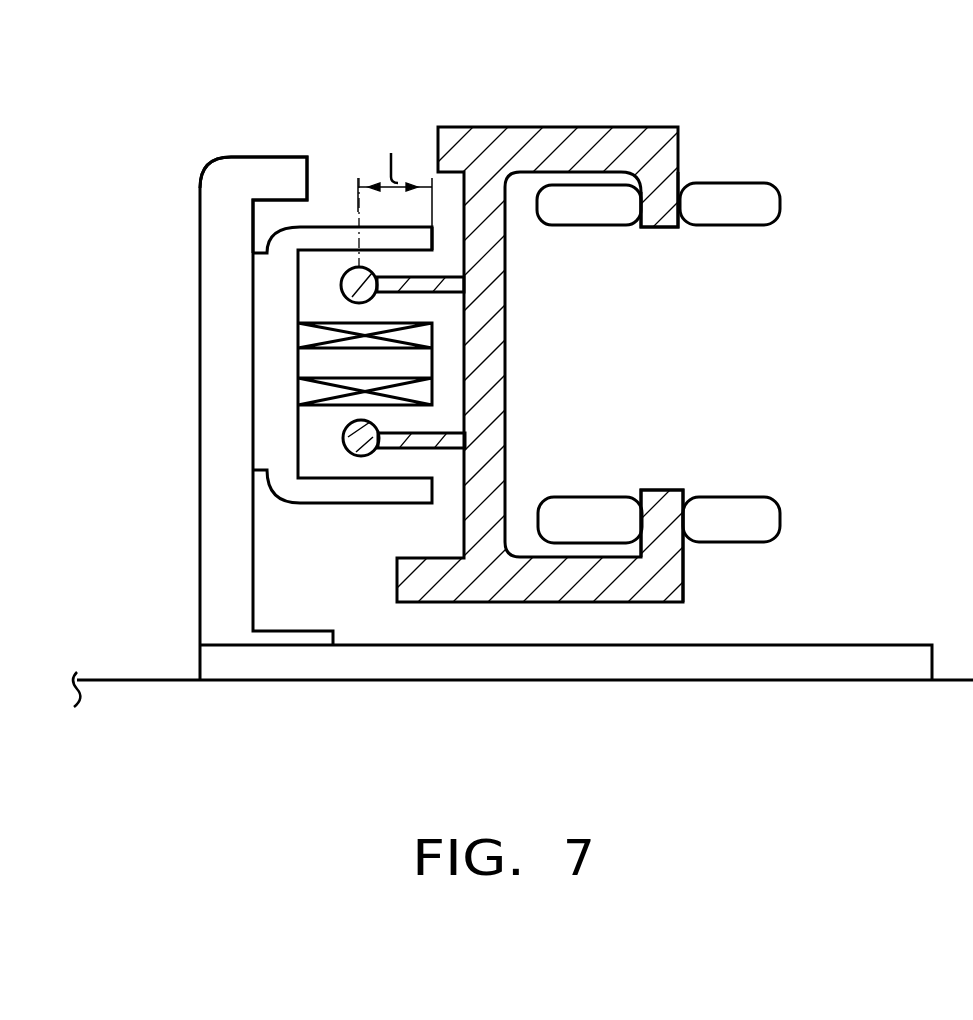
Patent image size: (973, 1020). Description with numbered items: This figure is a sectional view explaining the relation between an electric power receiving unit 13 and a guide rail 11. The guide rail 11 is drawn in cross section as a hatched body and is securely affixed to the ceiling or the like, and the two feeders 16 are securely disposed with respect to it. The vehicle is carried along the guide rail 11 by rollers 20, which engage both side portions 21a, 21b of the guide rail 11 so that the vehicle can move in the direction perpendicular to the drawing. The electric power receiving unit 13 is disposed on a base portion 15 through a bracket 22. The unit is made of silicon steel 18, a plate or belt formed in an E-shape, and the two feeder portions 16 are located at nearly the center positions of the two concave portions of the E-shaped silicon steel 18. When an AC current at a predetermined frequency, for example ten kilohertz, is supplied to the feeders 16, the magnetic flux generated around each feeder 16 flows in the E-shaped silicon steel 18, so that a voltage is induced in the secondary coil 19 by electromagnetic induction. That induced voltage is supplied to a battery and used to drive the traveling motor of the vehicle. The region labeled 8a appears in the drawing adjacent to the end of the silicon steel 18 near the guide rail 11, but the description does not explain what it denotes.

The rotor magnet portion 8a is at (433, 237).
The guide rail 11 is at (620, 127).
The electric power receiving unit 13 is at (278, 222).
The base portion 15 is at (788, 645).
The feeder 16 is at (348, 268).
The silicon steel 18 is at (282, 366).
The secondary coil 19 is at (322, 323).
The roller 20 is at (600, 226).
The side portion 21a is at (665, 227).
The side portion 21b is at (660, 493).
The bracket 22 is at (217, 483).